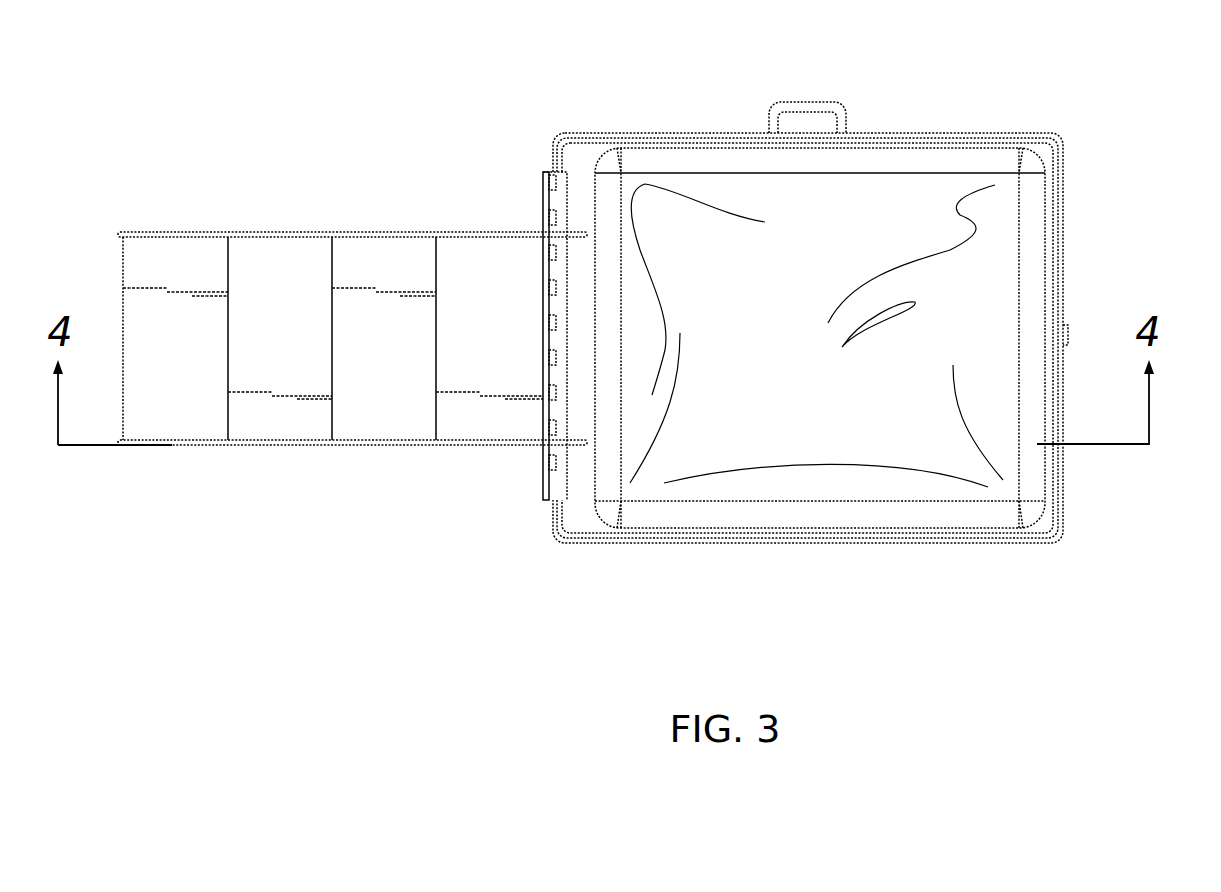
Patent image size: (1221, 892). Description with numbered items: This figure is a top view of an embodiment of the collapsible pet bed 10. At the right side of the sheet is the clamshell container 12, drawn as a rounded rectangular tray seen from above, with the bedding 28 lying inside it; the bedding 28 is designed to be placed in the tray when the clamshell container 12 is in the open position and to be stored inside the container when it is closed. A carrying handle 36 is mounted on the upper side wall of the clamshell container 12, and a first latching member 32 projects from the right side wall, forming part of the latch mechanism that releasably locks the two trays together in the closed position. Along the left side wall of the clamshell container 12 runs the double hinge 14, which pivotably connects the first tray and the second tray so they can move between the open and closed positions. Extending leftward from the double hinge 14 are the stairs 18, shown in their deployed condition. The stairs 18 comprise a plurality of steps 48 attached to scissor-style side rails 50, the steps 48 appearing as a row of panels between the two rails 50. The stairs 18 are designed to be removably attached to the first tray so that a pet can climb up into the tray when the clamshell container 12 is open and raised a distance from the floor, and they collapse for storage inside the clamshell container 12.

The collapsible pet bed 10 is at (357, 148).
The clamshell container 12 is at (1095, 495).
The double hinge 14 is at (558, 202).
The stairs 18 is at (283, 475).
The bedding 28 is at (920, 217).
The first latching member 32 is at (1068, 333).
The carrying handle 36 is at (812, 105).
The steps 48 is at (163, 238).
The scissor-style side rails 50 is at (278, 235).